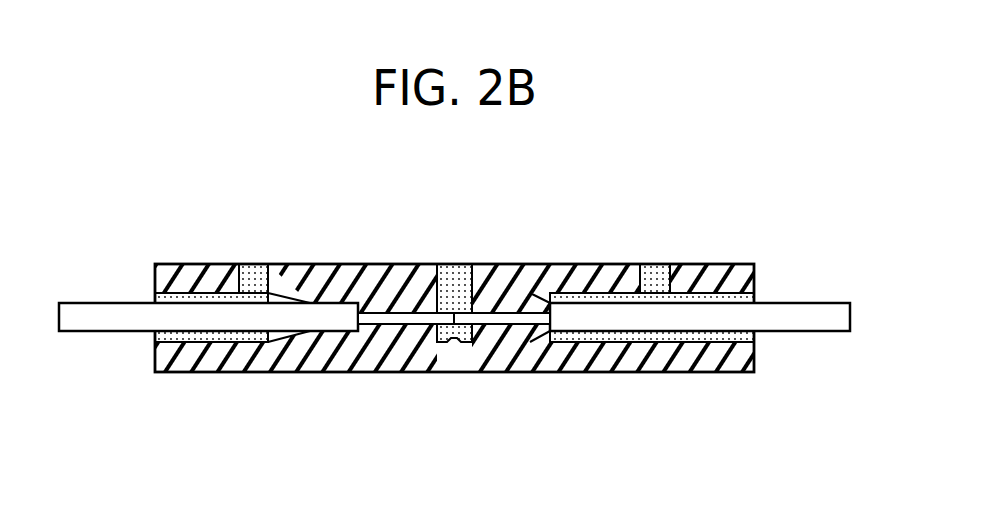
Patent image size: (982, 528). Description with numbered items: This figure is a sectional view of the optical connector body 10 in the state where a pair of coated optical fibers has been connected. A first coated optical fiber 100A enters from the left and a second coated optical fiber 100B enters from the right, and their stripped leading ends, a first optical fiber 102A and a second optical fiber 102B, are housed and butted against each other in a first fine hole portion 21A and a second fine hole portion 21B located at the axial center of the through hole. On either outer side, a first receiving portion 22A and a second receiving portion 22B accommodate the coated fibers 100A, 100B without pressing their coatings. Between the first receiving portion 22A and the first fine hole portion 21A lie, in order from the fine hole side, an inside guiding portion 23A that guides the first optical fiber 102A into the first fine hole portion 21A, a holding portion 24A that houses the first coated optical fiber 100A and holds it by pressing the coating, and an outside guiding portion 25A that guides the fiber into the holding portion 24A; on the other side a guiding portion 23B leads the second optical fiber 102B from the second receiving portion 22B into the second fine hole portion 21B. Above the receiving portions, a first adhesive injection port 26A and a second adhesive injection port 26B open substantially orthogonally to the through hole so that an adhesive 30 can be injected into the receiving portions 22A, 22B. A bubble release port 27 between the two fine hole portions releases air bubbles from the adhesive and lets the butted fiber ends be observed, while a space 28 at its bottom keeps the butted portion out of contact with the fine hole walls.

The optical connector body 10 is at (746, 256).
The first fine hole portion 21A is at (410, 325).
The second fine hole portion 21B is at (513, 326).
The first receiving portion 22A is at (200, 350).
The second receiving portion 22B is at (620, 338).
The inside guiding portion 23A is at (368, 326).
The guiding portion 23B is at (537, 333).
The holding portion 24A is at (318, 333).
The outside guiding portion 25A is at (277, 344).
The first adhesive injection port 26A is at (247, 264).
The second adhesive injection port 26B is at (651, 264).
The bubble release port 27 is at (455, 264).
The space 28 is at (451, 343).
The adhesive 30 is at (562, 300).
The first coated optical fiber 100A is at (97, 318).
The second coated optical fiber 100B is at (790, 318).
The first optical fiber 102A is at (390, 313).
The second optical fiber 102B is at (498, 306).